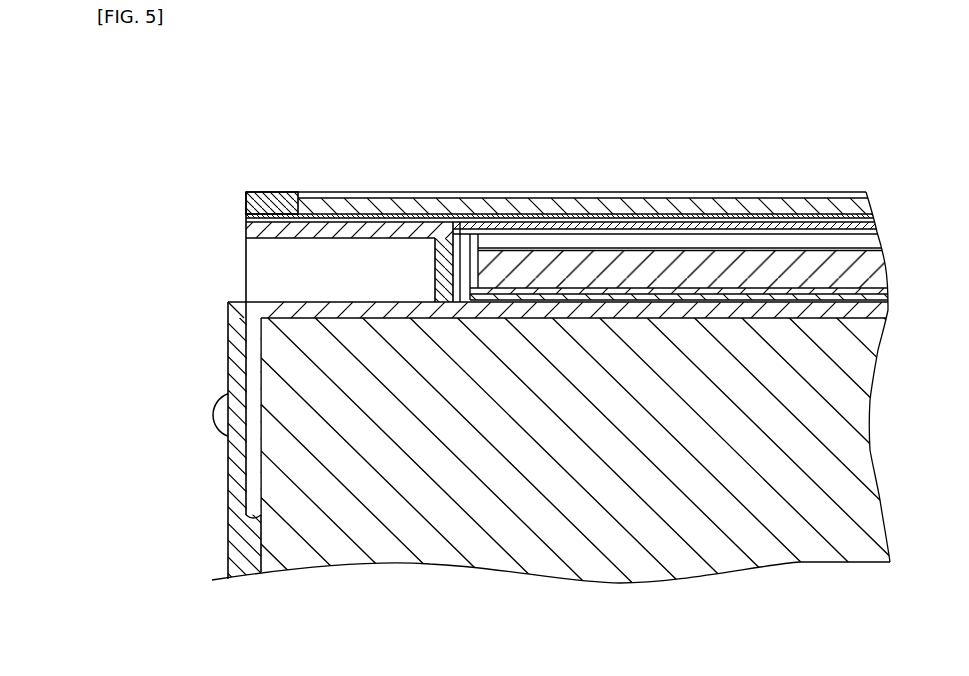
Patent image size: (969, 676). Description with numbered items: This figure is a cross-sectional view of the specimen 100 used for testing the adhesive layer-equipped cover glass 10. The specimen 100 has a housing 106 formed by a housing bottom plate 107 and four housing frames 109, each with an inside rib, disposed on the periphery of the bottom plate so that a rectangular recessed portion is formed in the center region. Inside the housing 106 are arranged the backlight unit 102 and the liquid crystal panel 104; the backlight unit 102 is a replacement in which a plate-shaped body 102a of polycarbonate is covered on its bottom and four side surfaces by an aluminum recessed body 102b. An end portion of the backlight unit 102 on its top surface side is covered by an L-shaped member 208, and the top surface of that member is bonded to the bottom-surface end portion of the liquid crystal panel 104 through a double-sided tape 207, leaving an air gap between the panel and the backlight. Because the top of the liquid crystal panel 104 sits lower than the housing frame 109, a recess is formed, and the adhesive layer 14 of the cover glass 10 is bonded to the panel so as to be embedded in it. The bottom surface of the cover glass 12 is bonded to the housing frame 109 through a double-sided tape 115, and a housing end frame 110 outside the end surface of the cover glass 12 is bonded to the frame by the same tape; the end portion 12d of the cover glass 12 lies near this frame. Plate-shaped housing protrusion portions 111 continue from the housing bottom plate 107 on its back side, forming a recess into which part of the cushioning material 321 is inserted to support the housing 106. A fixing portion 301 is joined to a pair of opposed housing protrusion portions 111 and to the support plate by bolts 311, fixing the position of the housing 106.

The adhesive layer-equipped cover glass 10 is at (729, 148).
The light emitting element 100 is at (241, 177).
The housing end frame 110 is at (275, 205).
The double-sided tape 115 is at (333, 213).
The housing frame 109 is at (384, 217).
The housing 106 is at (244, 229).
The L-shaped member 208 is at (453, 222).
The double-sided tape 207 is at (492, 240).
The housing bottom plate 107 is at (541, 290).
The cover glass 12 is at (585, 213).
The adhesive layer 14 is at (636, 217).
The liquid crystal panel 104 is at (669, 228).
The backlight unit 102 is at (697, 262).
The plate-shaped body 102a is at (850, 262).
The recessed body 102b is at (820, 292).
The insulating film top portion 12d is at (775, 197).
The housing protrusion portion 111 is at (250, 350).
The bolt 311 is at (222, 415).
The fixing portion 301 is at (240, 557).
The cushioning material 321 is at (437, 550).